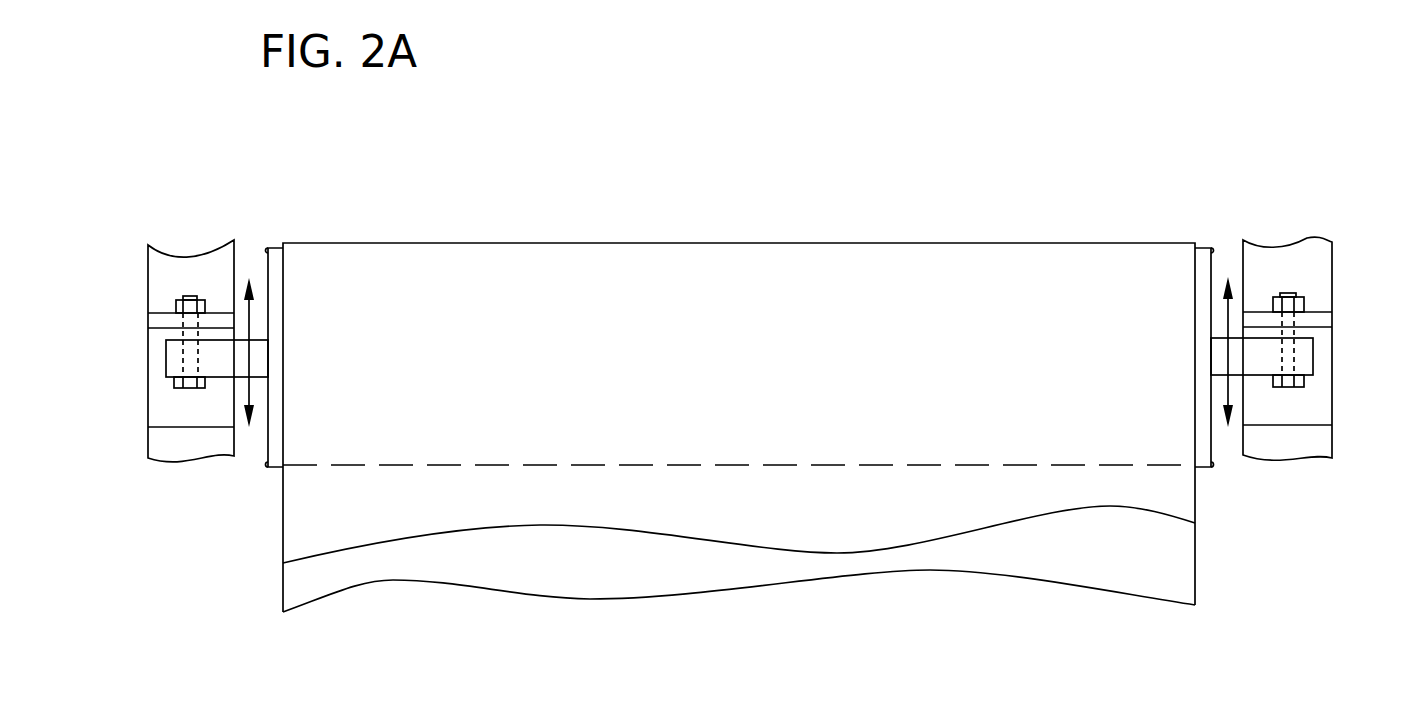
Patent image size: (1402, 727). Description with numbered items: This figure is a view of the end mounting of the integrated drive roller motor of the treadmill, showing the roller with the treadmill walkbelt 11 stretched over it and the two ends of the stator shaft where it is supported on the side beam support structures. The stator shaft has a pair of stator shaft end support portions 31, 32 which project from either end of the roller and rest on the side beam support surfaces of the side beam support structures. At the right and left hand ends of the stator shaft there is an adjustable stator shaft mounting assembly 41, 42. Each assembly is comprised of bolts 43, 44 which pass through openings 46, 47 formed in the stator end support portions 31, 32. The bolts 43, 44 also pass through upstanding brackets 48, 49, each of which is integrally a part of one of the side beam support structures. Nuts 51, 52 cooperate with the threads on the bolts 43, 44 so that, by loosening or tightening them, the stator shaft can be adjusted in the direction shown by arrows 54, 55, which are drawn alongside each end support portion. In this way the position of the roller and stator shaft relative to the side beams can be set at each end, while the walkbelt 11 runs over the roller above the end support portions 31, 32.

The treadmill walkbelt 11 is at (827, 422).
The stator shaft end support portion 31 is at (218, 358).
The stator shaft end support portion 32 is at (1257, 362).
The adjustable stator shaft mounting assembly 41 is at (1315, 390).
The adjustable stator shaft mounting assembly 42 is at (152, 383).
The bolt 43 is at (1273, 383).
The bolt 44 is at (203, 387).
The opening 46 is at (1288, 345).
The opening 47 is at (195, 353).
The upstanding bracket 48 is at (1318, 318).
The upstanding bracket 49 is at (160, 323).
The nut 51 is at (195, 307).
The nut 52 is at (1288, 302).
The arrow 54 is at (250, 320).
The arrow 55 is at (1228, 318).